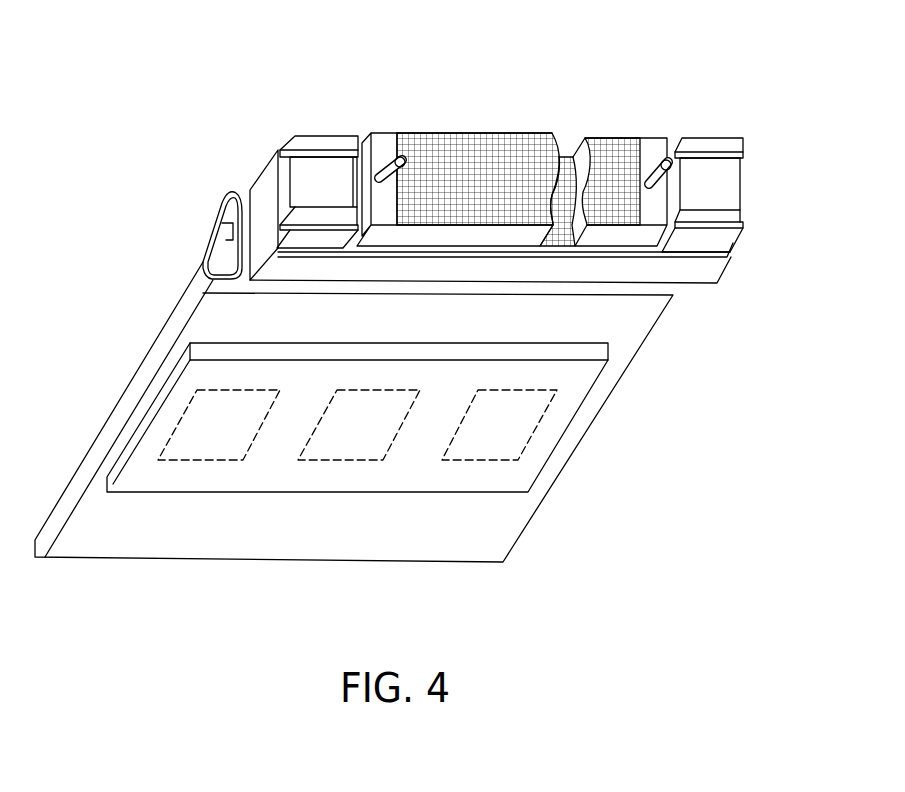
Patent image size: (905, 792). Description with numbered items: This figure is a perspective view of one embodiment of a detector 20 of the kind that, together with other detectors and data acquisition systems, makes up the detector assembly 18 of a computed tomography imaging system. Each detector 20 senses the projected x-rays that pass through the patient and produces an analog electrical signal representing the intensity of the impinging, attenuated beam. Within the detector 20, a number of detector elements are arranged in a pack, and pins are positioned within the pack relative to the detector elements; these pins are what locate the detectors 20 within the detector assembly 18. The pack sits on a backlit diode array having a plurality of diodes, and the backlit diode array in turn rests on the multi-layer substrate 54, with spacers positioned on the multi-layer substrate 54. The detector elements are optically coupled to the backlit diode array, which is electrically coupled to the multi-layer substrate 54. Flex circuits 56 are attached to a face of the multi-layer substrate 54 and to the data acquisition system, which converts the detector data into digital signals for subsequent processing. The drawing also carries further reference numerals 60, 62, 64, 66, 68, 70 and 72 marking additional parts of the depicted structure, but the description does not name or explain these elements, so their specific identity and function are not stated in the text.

The detector assembly 18 is at (682, 110).
The detector 20 is at (593, 438).
The multi-layer substrate 54 is at (480, 132).
The flex circuits 56 is at (410, 110).
The fastener pin 60 is at (388, 160).
The upper mounting bar 62 is at (643, 253).
The mesh strip section 64 is at (570, 157).
The lower mounting bar 66 is at (716, 272).
The end block 68 is at (328, 136).
The retaining clip 70 is at (200, 243).
The end plate 72 is at (260, 188).